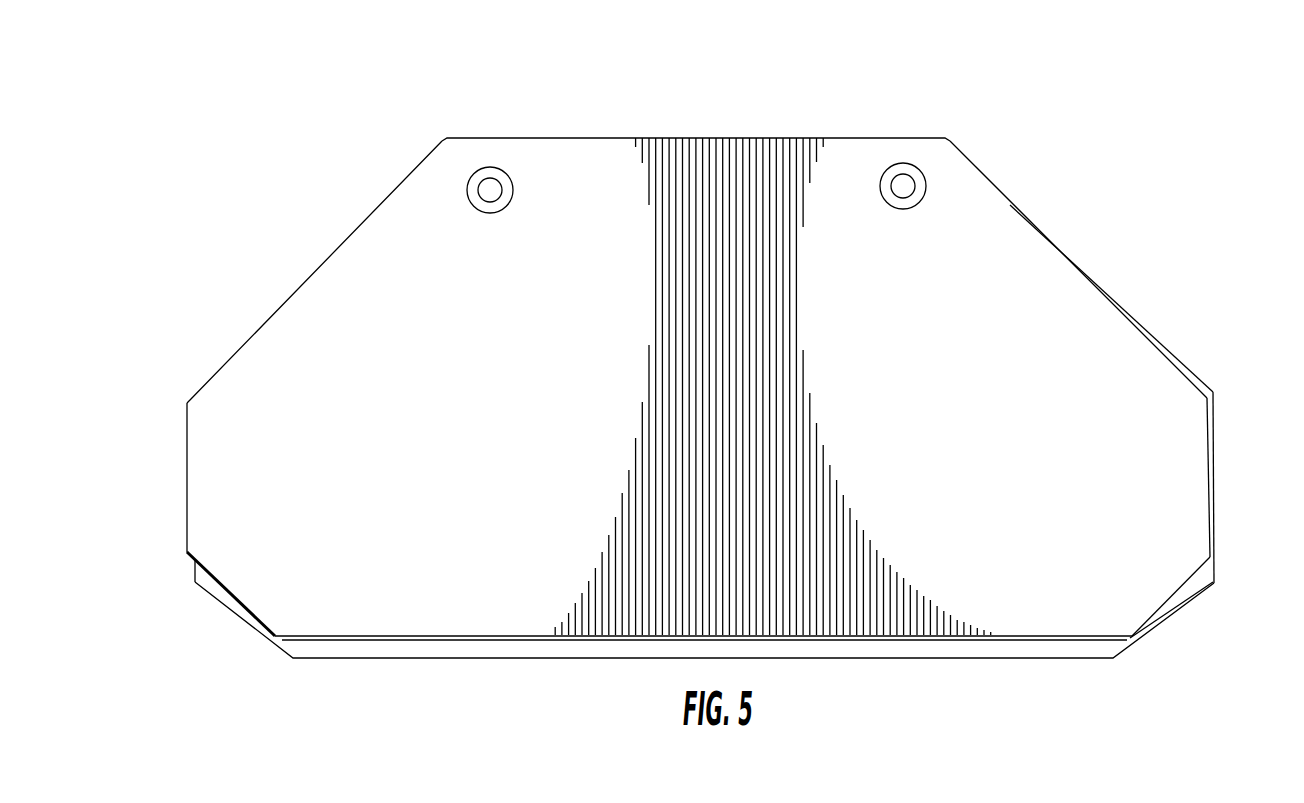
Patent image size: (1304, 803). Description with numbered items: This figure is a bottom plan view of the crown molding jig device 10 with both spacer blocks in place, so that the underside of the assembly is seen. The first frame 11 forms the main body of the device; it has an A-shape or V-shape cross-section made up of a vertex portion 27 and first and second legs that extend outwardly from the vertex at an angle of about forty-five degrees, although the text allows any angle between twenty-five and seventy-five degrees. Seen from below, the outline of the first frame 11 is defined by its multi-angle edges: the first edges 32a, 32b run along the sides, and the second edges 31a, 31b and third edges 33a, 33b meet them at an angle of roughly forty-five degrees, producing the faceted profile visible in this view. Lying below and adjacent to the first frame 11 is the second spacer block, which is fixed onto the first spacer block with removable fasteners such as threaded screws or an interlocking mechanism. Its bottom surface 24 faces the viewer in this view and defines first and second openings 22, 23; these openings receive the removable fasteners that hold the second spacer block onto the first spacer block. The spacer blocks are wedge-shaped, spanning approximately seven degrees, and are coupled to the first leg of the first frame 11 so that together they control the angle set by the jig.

The crown molding jig device 10 is at (1030, 60).
The first frame 11 is at (1084, 258).
The first opening 22 is at (512, 177).
The second opening 23 is at (874, 176).
The bottom surface 24 is at (403, 335).
The vertex portion 27 is at (458, 659).
The second edge 31a is at (293, 292).
The second edge 31b is at (1125, 307).
The first edge 32a is at (187, 470).
The first edge 32b is at (1211, 467).
The third edge 33a is at (235, 598).
The third edge 33b is at (1167, 603).